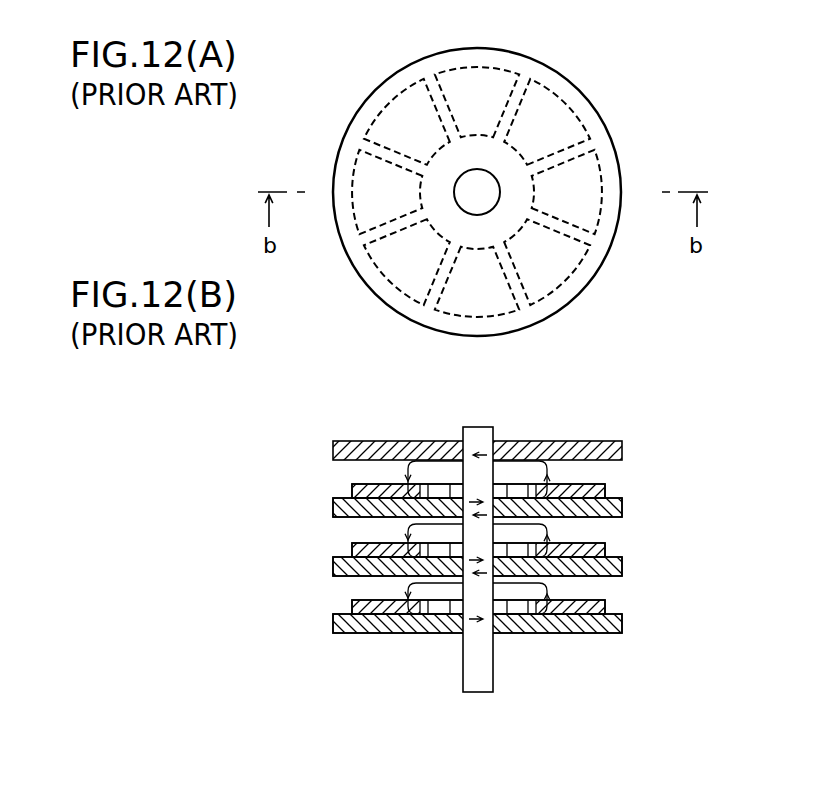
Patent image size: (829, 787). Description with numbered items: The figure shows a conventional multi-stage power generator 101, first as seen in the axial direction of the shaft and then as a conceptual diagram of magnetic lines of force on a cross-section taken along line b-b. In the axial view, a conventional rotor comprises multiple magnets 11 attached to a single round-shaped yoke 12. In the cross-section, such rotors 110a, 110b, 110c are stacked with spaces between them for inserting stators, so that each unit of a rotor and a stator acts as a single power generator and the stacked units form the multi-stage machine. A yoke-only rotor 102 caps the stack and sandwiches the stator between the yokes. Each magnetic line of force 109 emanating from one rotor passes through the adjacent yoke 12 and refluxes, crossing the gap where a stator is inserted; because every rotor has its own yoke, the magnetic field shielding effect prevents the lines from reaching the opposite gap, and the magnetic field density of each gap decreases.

In FIG. 12A, the heat exchanger (prior art) 101 is at (618, 96).
In FIG. 12B, the heat exchanger (prior art) 101 is at (362, 412).
In FIG. 12A, the yoke-only rotor 102 is at (613, 145).
In FIG. 12B, the yoke-only rotor 102 is at (606, 444).
In FIG. 12A, the magnet 11 is at (563, 262).
In FIG. 12B, the magnet 11 is at (606, 489).
In FIG. 12B, the yoke 12 is at (620, 508).
In FIG. 12B, the magnetic line of force 109 is at (548, 465).
In FIG. 12B, the rotor 110a is at (340, 603).
In FIG. 12B, the rotor 110b is at (340, 546).
In FIG. 12B, the rotor 110c is at (340, 489).